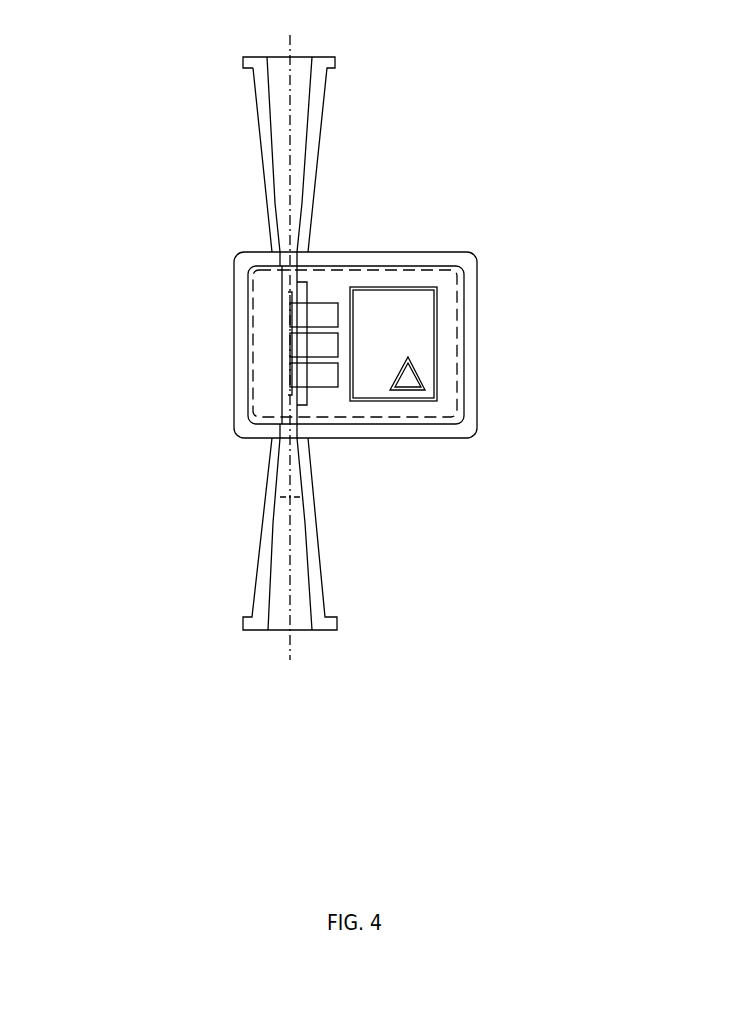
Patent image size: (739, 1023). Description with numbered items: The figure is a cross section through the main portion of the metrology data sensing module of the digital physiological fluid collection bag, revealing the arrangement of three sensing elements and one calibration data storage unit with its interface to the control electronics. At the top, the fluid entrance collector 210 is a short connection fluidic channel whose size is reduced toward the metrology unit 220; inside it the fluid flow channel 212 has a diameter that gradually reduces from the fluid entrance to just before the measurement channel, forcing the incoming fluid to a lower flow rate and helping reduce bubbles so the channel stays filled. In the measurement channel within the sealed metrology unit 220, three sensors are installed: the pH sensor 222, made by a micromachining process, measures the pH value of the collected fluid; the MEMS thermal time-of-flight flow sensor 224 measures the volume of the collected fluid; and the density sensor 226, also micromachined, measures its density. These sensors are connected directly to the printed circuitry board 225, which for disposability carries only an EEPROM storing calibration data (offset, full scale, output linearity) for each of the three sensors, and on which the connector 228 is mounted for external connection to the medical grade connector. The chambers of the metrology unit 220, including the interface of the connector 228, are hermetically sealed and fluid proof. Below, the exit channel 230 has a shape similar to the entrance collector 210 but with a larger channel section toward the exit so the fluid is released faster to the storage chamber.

The fluid entrance collector 210 is at (312, 90).
The fluid flow channel 212 is at (285, 133).
The metrology unit 220 is at (467, 262).
The pH sensor 222 is at (312, 315).
The MEMS thermal time-of-flight flow sensor 224 is at (313, 345).
The printed circuitry board 225 is at (405, 332).
The density sensor 226 is at (313, 373).
The connector 228 is at (407, 380).
The exit channel 230 is at (317, 587).